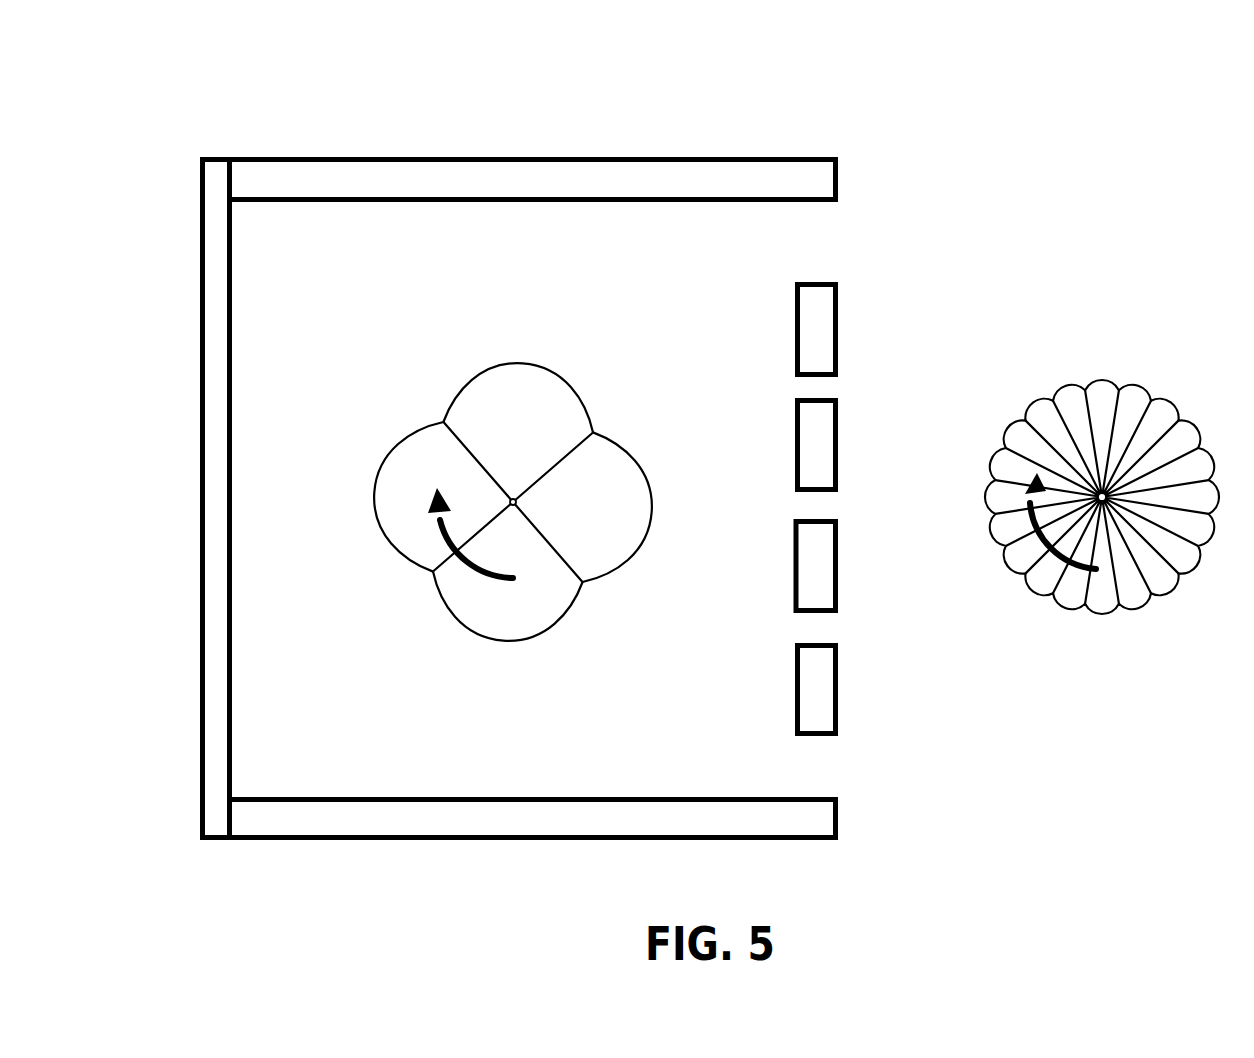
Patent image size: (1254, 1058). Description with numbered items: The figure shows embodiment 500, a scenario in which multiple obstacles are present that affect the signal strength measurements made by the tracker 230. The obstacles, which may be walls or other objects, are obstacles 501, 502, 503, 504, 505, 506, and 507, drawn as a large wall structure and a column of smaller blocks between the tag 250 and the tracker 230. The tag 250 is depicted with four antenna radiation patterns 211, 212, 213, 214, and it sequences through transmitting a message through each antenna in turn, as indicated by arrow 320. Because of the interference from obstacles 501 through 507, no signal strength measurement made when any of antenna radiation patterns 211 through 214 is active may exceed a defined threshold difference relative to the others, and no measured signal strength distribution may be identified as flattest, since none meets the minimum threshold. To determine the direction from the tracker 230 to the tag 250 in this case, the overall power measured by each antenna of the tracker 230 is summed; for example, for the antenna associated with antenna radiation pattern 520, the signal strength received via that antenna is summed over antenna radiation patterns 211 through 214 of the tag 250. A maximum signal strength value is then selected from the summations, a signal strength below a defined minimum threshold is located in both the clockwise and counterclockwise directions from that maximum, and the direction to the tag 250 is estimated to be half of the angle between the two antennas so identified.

The embodiment 500 is at (188, 91).
The obstacle 501 is at (838, 797).
The obstacle 502 is at (229, 273).
The obstacle 503 is at (838, 184).
The obstacle 504 is at (838, 284).
The obstacle 505 is at (838, 400).
The obstacle 506 is at (838, 521).
The obstacle 507 is at (838, 644).
The antenna radiation pattern 211 is at (625, 453).
The antenna radiation pattern 212 is at (585, 403).
The antenna radiation pattern 213 is at (393, 543).
The antenna radiation pattern 214 is at (468, 631).
The tag 250 is at (513, 498).
The arrow 320 is at (452, 525).
The tracker 230 is at (1102, 497).
The antenna radiation pattern 520 is at (1050, 606).